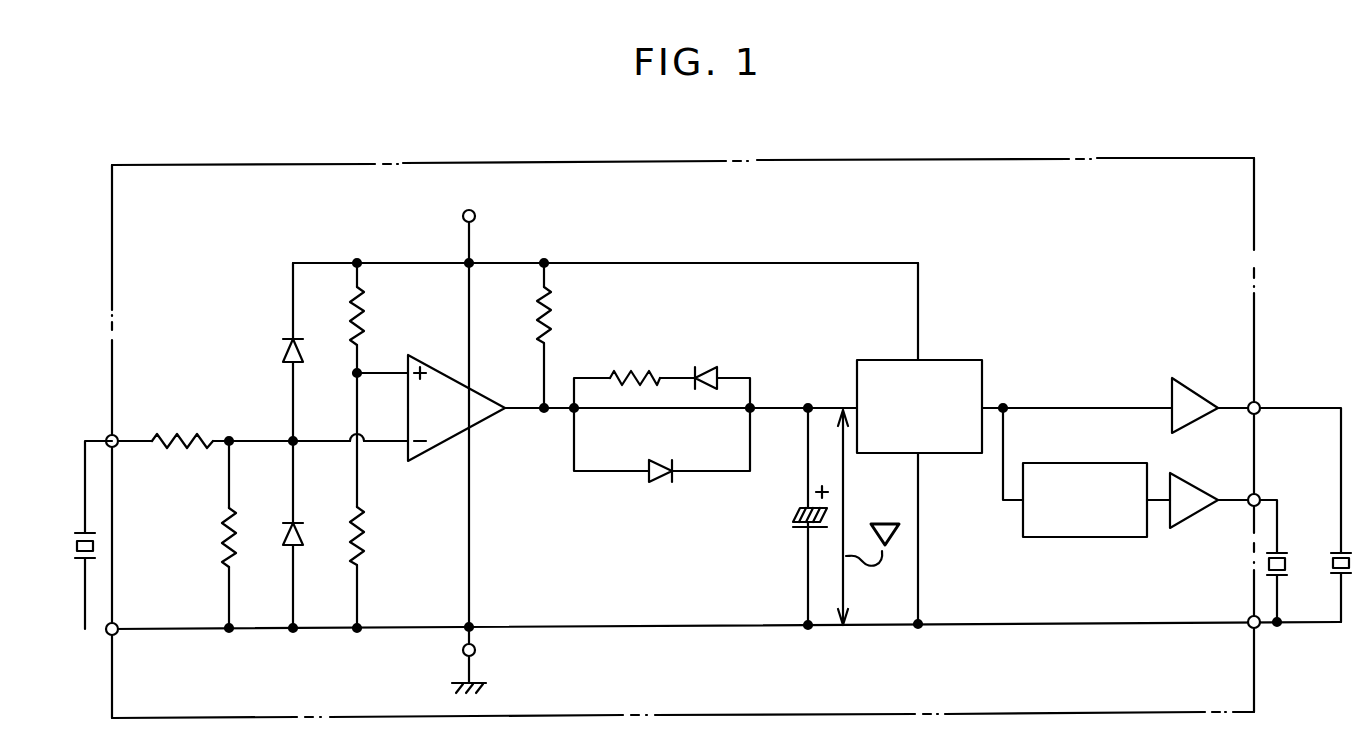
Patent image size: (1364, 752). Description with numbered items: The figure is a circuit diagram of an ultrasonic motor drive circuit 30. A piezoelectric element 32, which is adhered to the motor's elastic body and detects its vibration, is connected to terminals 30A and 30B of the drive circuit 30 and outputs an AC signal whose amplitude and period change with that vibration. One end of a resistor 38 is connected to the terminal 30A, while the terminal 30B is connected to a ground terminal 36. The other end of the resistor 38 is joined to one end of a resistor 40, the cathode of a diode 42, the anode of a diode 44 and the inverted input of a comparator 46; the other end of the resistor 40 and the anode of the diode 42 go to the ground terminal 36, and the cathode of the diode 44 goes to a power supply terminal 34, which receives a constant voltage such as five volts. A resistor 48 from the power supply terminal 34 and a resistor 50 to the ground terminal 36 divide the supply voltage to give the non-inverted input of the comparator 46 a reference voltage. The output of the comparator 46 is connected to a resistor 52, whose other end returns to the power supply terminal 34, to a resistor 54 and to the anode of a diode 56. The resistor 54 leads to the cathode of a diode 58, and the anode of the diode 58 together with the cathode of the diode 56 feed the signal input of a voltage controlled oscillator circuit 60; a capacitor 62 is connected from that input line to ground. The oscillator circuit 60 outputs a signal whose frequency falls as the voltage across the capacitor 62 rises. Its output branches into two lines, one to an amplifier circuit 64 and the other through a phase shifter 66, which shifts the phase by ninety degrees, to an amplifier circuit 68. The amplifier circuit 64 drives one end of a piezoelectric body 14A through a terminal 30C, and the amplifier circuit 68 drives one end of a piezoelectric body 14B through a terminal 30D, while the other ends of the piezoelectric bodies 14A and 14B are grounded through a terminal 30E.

The ultrasonic motor drive circuit 30 is at (1257, 250).
The terminal 30A is at (108, 436).
The terminal 30B is at (108, 635).
The terminal 30C is at (1259, 400).
The terminal 30D is at (1249, 504).
The terminal 30E is at (1250, 628).
The piezoelectric element 32 is at (73, 545).
The power supply terminal 34 is at (463, 212).
The ground terminal 36 is at (475, 650).
The resistor 38 is at (192, 433).
The resistor 40 is at (222, 534).
The diode 42 is at (287, 520).
The diode 44 is at (285, 336).
The comparator 46 is at (443, 368).
The resistor 48 is at (348, 339).
The resistor 50 is at (350, 520).
The resistor 52 is at (553, 323).
The resistor 54 is at (643, 372).
The diode 56 is at (658, 484).
The diode 58 is at (708, 365).
The voltage controlled oscillator circuit 60 is at (963, 360).
The capacitor 62 is at (800, 530).
The amplifier circuit 64 is at (1197, 397).
The phase shifter 66 is at (1050, 537).
The amplifier circuit 68 is at (1182, 530).
The piezoelectric body 14A is at (1333, 570).
The piezoelectric body 14B is at (1287, 557).